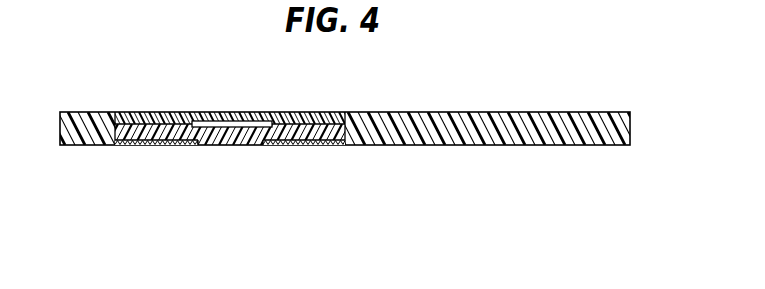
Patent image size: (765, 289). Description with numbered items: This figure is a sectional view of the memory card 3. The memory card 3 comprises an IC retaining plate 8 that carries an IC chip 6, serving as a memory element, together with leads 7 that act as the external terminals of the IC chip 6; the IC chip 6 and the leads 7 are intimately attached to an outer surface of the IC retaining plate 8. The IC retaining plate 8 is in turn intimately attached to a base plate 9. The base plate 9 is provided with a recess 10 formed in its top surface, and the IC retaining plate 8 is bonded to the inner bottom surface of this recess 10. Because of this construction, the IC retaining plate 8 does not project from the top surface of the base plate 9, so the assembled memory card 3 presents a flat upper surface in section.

The memory card 3 is at (341, 135).
The IC chip 6 is at (212, 113).
The leads 7 is at (148, 146).
The IC retaining plate 8 is at (228, 146).
The base plate 9 is at (418, 112).
The recess 10 is at (247, 113).